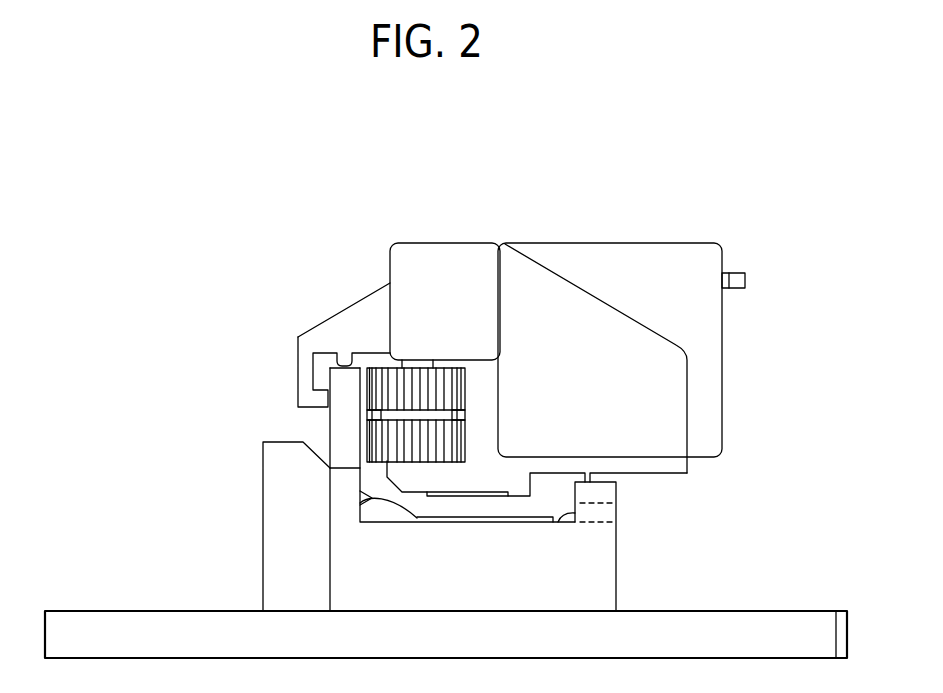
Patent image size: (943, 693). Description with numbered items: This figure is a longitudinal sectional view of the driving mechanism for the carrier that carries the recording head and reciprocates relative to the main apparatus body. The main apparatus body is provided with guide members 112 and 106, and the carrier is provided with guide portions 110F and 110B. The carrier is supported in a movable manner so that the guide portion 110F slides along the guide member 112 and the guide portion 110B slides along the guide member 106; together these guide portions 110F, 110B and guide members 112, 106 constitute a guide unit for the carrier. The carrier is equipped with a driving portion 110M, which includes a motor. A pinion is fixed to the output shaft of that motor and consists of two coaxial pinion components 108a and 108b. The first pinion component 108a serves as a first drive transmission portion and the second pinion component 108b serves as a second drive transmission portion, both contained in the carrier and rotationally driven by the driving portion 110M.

The guide member 106 is at (608, 493).
The first pinion component 108a is at (457, 383).
The second pinion component 108b is at (457, 448).
The guide portion 110B is at (587, 480).
The guide portion 110F is at (318, 334).
The driving portion 110M is at (417, 279).
The guide member 112 is at (343, 423).